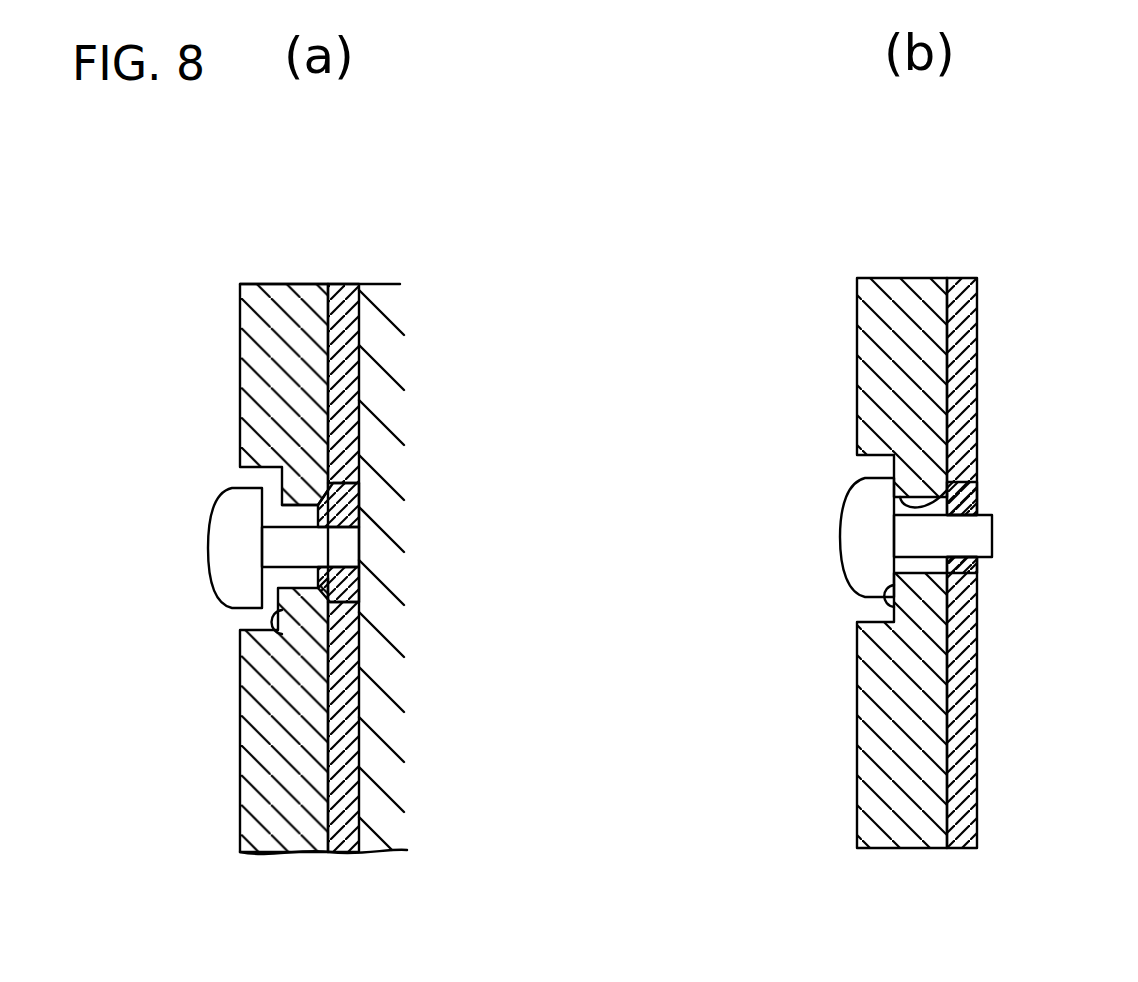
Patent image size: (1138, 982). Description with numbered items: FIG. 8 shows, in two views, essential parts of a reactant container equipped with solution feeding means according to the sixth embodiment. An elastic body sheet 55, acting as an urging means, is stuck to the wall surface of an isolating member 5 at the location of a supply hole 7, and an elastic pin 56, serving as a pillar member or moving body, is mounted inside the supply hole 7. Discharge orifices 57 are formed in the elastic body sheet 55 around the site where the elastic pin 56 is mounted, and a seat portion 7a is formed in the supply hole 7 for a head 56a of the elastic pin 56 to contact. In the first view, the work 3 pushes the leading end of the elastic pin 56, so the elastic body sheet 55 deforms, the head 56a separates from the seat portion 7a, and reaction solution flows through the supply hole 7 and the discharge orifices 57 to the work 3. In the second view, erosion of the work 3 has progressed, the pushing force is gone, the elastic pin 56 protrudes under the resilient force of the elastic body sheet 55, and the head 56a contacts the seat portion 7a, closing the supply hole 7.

The work 3 is at (372, 332).
The isolating member 5 is at (268, 353).
The supply hole 7 is at (287, 505).
The seat portion 7a is at (290, 637).
The elastic body sheet 55 is at (360, 368).
The elastic pin 56 is at (368, 552).
The head of the elastic pin 56a is at (222, 498).
The discharge orifices 57 is at (360, 503).